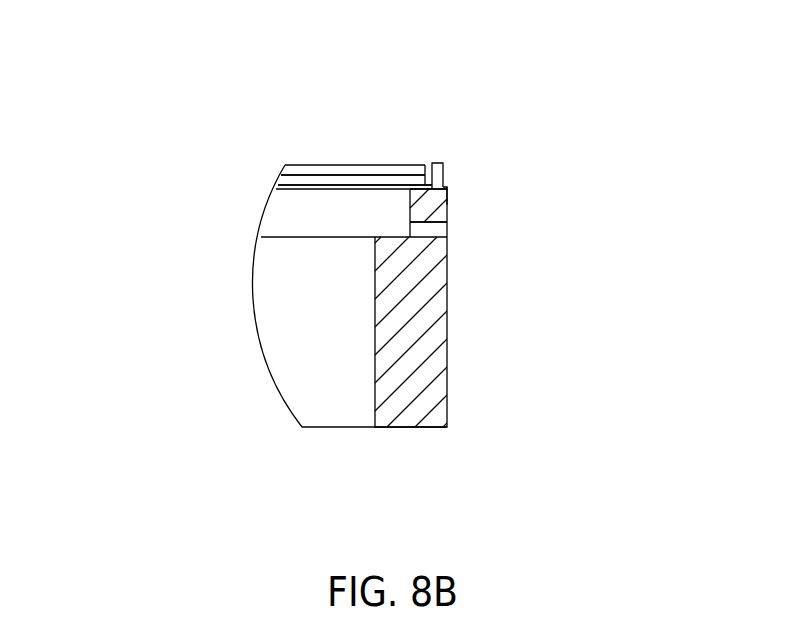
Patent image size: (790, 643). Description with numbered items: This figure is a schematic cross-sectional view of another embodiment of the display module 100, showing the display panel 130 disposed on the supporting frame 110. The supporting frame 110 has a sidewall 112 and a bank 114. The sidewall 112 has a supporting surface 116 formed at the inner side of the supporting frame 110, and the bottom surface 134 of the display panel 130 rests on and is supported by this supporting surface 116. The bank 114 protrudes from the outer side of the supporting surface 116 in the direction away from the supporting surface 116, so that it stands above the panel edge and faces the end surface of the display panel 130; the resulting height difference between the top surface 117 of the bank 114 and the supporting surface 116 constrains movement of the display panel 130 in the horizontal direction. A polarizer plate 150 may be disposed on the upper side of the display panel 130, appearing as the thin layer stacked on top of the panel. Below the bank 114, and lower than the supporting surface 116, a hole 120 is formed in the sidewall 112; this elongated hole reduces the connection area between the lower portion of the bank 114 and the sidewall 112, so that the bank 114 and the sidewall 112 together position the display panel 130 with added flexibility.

The display module 100 is at (148, 141).
The supporting frame 110 is at (454, 307).
The sidewall 112 is at (442, 212).
The bank 114 is at (443, 173).
The supporting surface 116 is at (432, 190).
The top surface 117 is at (441, 164).
The hole 120 is at (451, 232).
The display panel 130 is at (331, 174).
The bottom surface 134 is at (405, 186).
The polarizer plate 150 is at (294, 164).